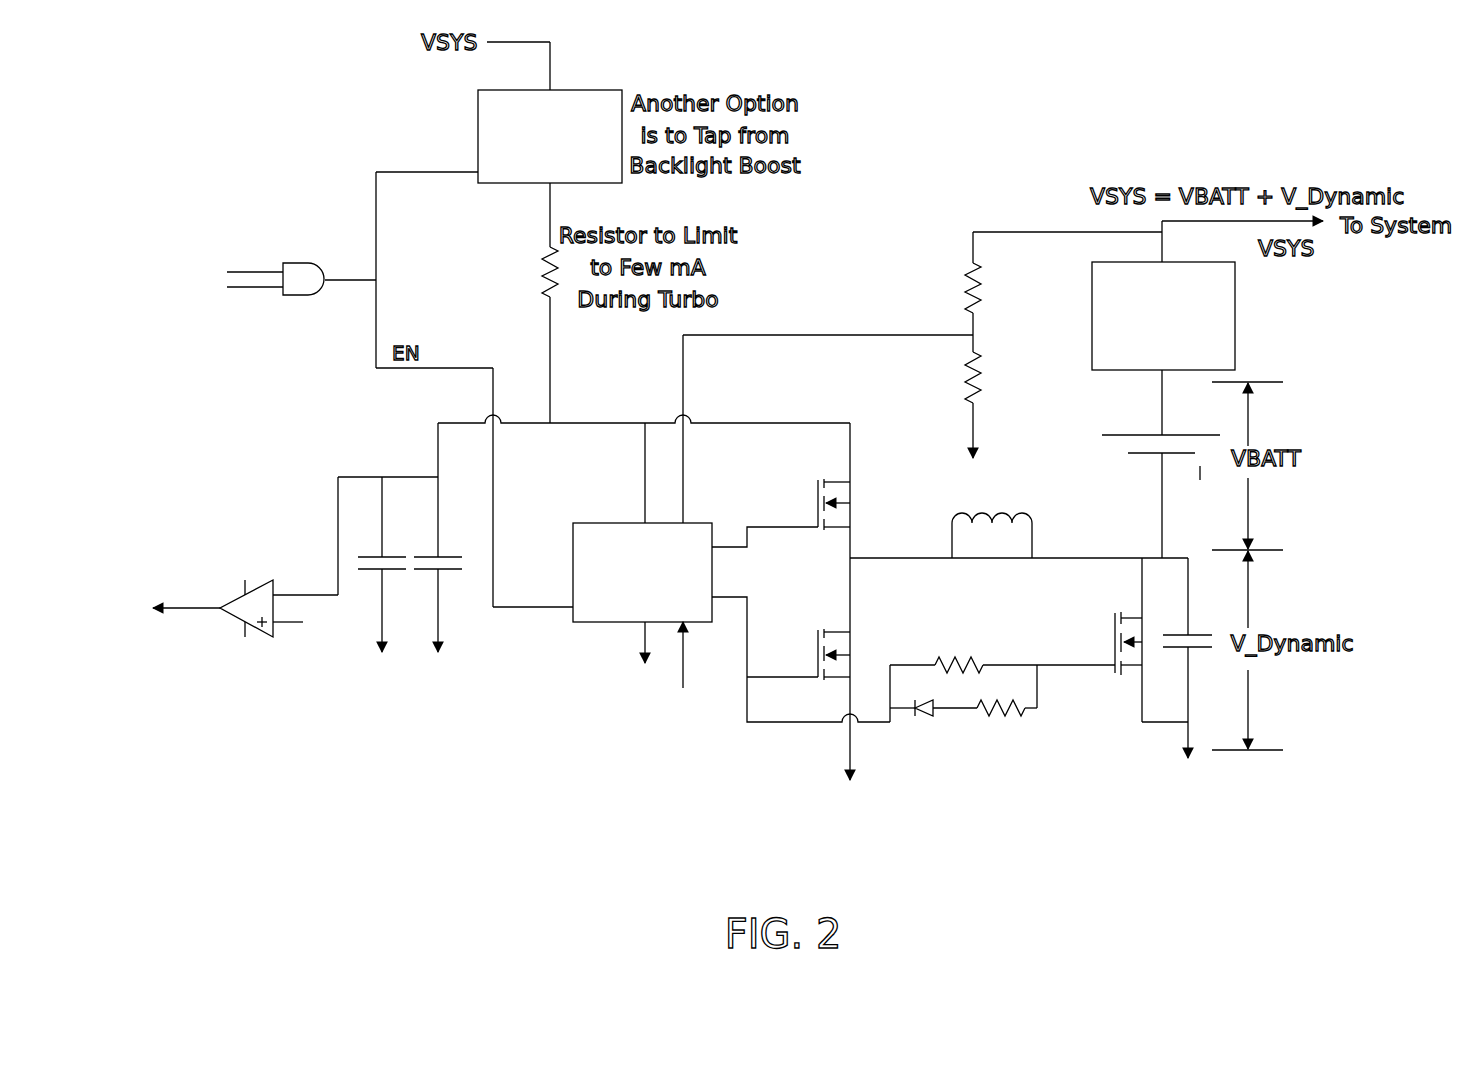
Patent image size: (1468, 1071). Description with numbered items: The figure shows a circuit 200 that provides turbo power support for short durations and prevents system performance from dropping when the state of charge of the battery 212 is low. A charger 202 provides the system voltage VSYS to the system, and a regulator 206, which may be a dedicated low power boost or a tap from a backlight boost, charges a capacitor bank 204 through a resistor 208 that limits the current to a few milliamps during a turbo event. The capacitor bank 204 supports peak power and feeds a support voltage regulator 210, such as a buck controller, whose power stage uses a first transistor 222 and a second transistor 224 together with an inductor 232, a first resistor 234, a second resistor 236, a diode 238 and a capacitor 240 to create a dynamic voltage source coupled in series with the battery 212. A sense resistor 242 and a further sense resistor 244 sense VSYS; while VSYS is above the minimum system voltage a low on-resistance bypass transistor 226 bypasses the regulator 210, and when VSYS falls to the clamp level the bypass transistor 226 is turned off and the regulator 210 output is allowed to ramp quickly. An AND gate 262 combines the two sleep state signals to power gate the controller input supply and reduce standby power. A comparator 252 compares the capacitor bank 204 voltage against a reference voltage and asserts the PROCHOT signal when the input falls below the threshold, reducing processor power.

The circuit 200 is at (757, 901).
The charger 202 is at (1237, 315).
The capacitor bank 204 is at (393, 557).
The regulator 206 is at (578, 90).
The resistor 208 is at (541, 266).
The support voltage regulator 210 is at (712, 568).
The battery 212 is at (1138, 435).
The transistor M1 222 is at (818, 498).
The transistor M2 224 is at (818, 648).
The transistor M3 226 is at (1113, 633).
The inductor L1 232 is at (1032, 523).
The resistor R1 234 is at (950, 655).
The resistor R2 236 is at (1022, 712).
The diode D1 238 is at (930, 706).
The capacitor 240 is at (1190, 635).
The resistor 242 is at (966, 290).
The resistor 244 is at (966, 375).
The comparator 252 is at (273, 580).
The AND gate 262 is at (305, 263).